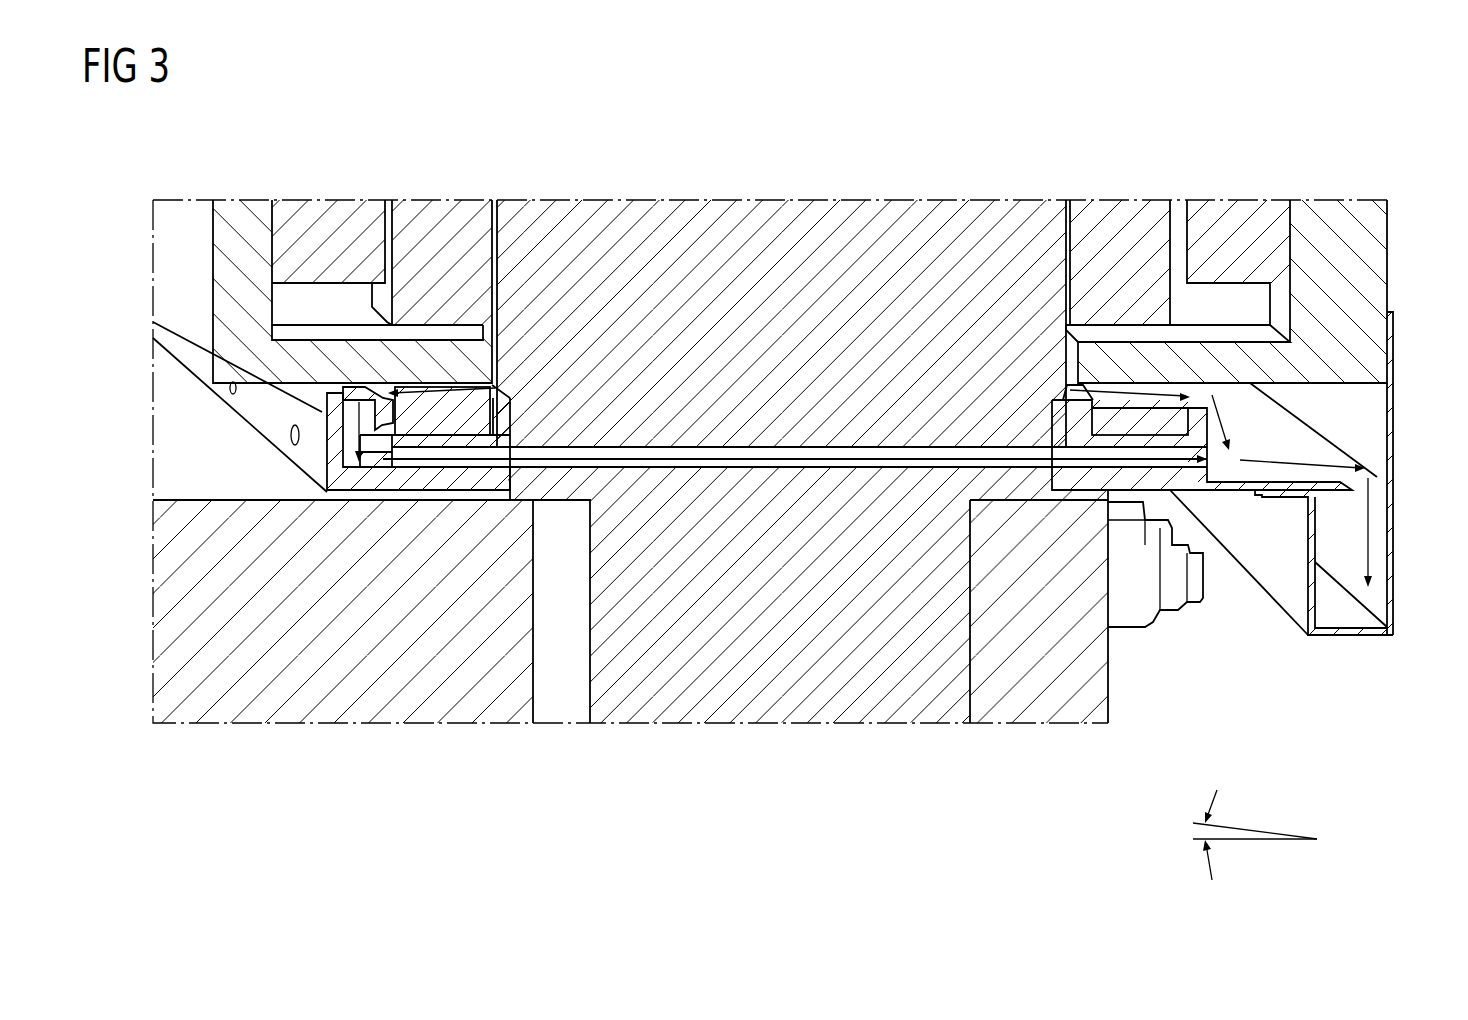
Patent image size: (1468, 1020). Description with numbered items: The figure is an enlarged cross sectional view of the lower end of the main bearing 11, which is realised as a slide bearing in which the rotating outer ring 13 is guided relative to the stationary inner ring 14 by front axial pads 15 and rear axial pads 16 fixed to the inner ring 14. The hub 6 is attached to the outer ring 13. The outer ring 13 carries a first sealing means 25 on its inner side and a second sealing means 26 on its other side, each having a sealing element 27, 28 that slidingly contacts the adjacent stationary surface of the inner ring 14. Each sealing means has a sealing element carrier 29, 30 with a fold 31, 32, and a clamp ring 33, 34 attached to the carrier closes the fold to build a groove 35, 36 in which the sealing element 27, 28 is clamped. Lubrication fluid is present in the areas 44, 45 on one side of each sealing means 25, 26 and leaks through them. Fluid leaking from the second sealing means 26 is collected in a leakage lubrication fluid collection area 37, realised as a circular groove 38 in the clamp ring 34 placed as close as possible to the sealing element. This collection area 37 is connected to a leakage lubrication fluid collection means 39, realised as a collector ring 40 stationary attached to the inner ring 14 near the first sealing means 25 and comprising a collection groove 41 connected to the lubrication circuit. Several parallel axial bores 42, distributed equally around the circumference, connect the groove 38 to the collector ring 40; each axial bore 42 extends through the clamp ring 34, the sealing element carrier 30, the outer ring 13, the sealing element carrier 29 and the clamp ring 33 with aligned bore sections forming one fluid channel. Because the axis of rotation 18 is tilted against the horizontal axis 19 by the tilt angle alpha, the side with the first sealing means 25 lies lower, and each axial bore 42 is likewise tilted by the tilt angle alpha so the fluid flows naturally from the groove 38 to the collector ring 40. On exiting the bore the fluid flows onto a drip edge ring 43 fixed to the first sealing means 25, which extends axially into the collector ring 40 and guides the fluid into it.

The hub 6 is at (203, 710).
The main bearing 11 is at (1366, 148).
The outer ring 13 is at (793, 200).
The inner ring 14 is at (230, 207).
The front axial pads 15 is at (457, 200).
The rear axial pads 16 is at (1113, 200).
The axis of rotation 18 is at (1257, 830).
The horizontal axis 19 is at (1257, 845).
The first sealing means 25 is at (1215, 508).
The second sealing means 26 is at (410, 503).
The sealing element 27 is at (1147, 420).
The sealing element 28 is at (428, 398).
The sealing element carrier 29 is at (1123, 483).
The sealing element carrier 30 is at (445, 478).
The fold 31 is at (1050, 423).
The fold 32 is at (493, 412).
The clamp ring 33 is at (1228, 410).
The clamp ring 34 is at (333, 463).
The groove 35 is at (1153, 440).
The groove 36 is at (457, 435).
The leakage lubrication fluid collection area 37 is at (334, 380).
The circular groove 38 is at (327, 417).
The leakage lubrication fluid collection means 39 is at (1400, 590).
The collector ring 40 is at (1393, 420).
The collection groove 41 is at (1360, 636).
The axial bore 42 is at (812, 470).
The drip edge ring 43 is at (1297, 442).
The area 44 is at (1252, 292).
The area 45 is at (300, 290).
The tilt angle alpha is at (1200, 830).